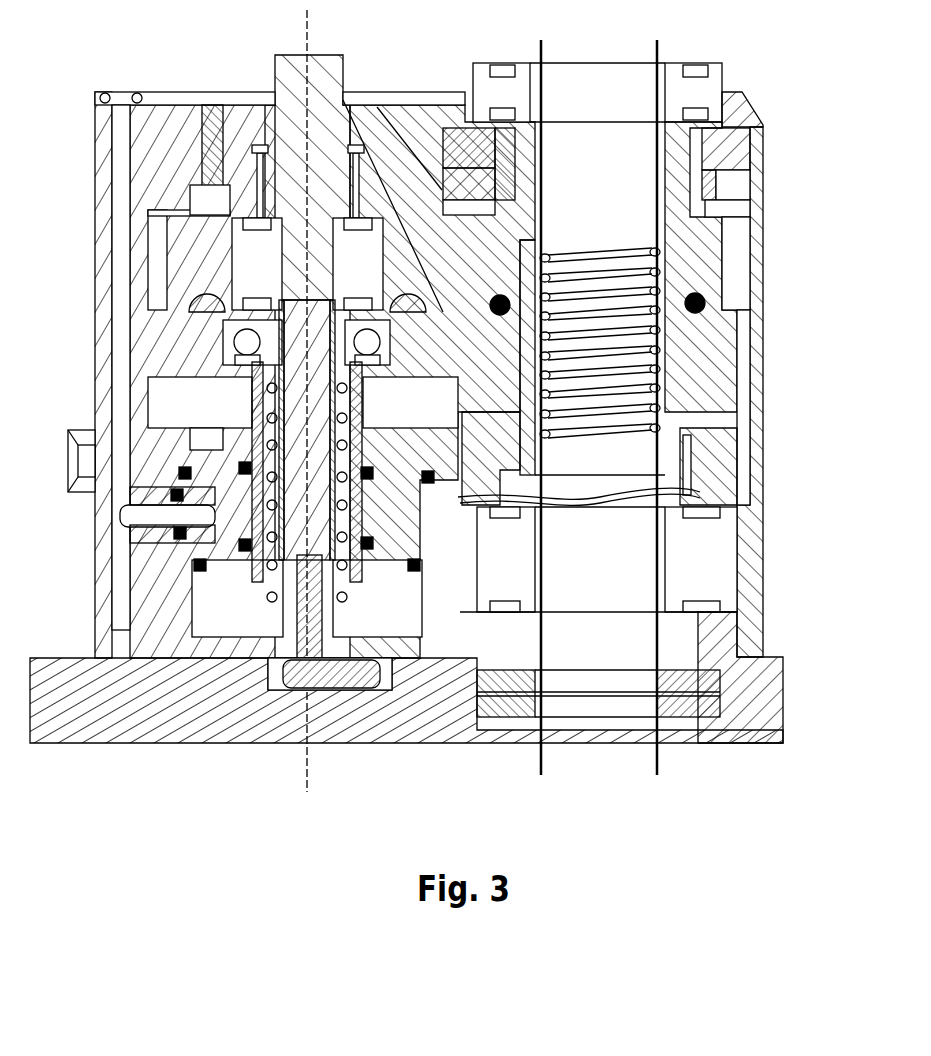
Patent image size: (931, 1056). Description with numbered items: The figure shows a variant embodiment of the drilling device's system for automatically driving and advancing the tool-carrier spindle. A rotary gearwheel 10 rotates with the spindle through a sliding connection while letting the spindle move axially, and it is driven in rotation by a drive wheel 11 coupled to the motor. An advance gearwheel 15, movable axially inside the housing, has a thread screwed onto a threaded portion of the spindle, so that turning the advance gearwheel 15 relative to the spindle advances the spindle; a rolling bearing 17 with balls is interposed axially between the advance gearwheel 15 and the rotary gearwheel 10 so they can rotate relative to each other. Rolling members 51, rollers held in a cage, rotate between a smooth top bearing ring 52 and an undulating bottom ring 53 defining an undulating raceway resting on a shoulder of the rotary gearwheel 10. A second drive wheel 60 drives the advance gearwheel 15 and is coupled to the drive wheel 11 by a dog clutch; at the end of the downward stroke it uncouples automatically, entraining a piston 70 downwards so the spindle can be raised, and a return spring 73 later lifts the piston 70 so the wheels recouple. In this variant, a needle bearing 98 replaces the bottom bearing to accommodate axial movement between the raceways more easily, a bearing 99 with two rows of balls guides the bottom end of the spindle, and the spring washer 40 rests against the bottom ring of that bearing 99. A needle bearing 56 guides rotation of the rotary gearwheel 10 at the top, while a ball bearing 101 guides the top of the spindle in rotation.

The drive wheel 11 is at (185, 244).
The drive wheel 60 is at (165, 328).
The return spring 73 is at (240, 418).
The piston 70 is at (240, 572).
The ball bearing 101 is at (705, 97).
The needle bearing 56 is at (740, 100).
The smooth top bearing ring 52 is at (725, 160).
The rolling members 51 is at (735, 183).
The undulating bottom ring 53 is at (738, 208).
The rotary gearwheel 10 is at (735, 248).
The rolling bearing 17 is at (708, 298).
The advance gearwheel 15 is at (715, 350).
The needle bearing 98 is at (707, 438).
The resilient return member 40 is at (700, 533).
The bearing 99 is at (700, 568).